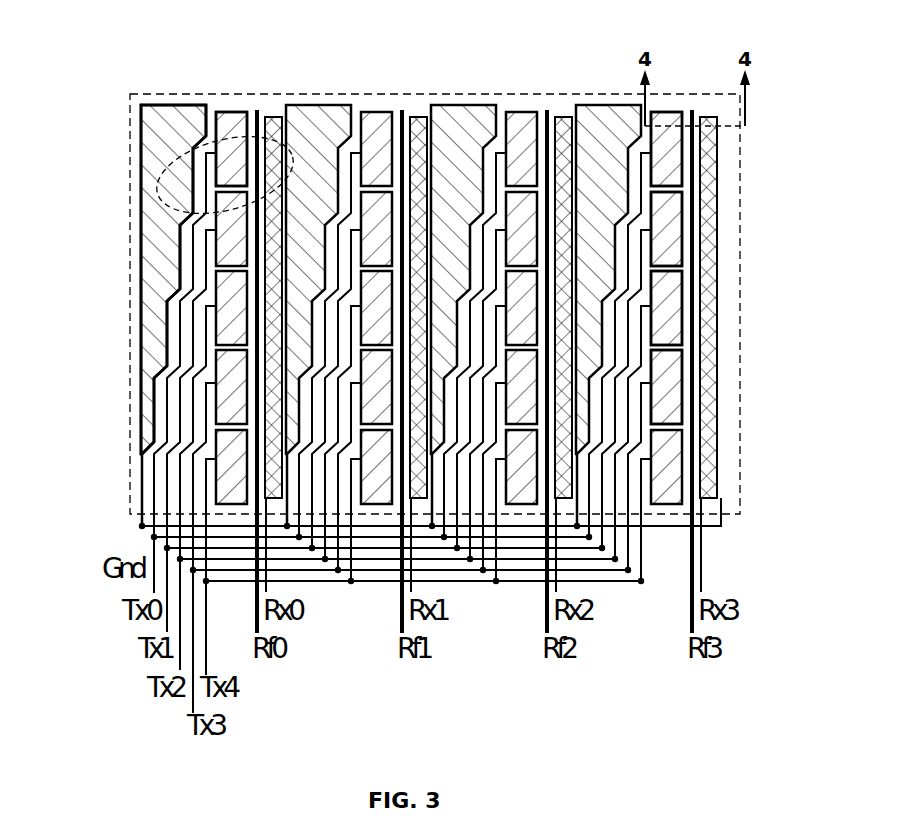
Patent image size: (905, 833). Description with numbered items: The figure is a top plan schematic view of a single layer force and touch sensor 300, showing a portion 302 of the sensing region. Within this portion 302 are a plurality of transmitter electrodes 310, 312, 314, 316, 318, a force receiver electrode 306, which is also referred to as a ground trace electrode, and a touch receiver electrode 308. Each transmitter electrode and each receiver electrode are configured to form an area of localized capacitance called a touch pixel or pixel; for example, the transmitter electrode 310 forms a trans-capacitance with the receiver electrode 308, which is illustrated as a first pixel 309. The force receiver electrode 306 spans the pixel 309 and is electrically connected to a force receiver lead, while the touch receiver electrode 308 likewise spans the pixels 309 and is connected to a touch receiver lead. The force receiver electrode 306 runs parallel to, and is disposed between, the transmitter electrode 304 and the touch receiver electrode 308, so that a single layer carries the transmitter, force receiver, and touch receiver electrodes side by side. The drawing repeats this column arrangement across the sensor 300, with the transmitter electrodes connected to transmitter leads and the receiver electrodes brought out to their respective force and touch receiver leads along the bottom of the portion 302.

The single layer force and touch sensor 300 is at (133, 45).
The portion of sensing region 302 is at (497, 93).
The transmitter electrode 304 is at (258, 95).
The force receiver electrode 306 is at (253, 241).
The touch receiver electrode 308 is at (272, 116).
The first pixel 309 is at (160, 220).
The transmitter electrode 310 is at (668, 165).
The transmitter electrode 312 is at (668, 240).
The transmitter electrode 314 is at (668, 318).
The transmitter electrode 316 is at (668, 390).
The transmitter electrode 318 is at (708, 470).